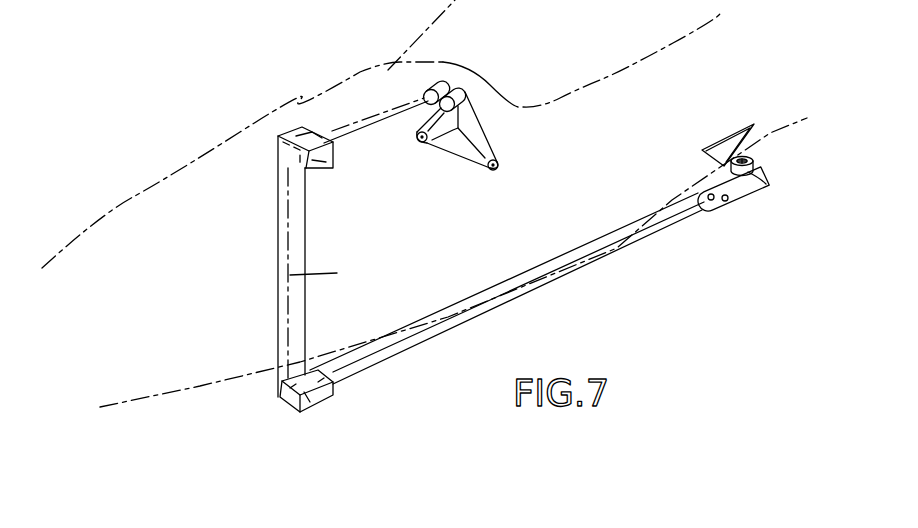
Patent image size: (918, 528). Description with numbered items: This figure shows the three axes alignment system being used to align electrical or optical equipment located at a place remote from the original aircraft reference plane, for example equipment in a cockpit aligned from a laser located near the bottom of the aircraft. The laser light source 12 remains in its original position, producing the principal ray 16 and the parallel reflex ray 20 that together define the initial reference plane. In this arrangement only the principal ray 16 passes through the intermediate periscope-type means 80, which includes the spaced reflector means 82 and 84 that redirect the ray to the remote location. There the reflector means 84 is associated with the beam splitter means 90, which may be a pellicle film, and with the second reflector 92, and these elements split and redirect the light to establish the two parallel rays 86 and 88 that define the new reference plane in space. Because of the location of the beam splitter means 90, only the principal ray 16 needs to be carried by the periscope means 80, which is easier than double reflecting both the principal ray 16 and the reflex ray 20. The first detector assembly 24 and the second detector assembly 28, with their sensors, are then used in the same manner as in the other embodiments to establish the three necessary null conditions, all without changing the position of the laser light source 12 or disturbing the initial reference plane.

The laser light source 12 is at (750, 187).
The principal ray 16 is at (550, 263).
The reflex ray 20 is at (512, 303).
The first detector assembly 24 is at (438, 80).
The second detector assembly 28 is at (460, 110).
The periscope-type means 80 is at (277, 252).
The reflector means 82 is at (280, 397).
The reflector means 84 is at (280, 160).
The parallel ray 86 is at (352, 128).
The parallel ray 88 is at (350, 136).
The beam splitter means 90 is at (318, 130).
The second reflector 92 is at (322, 172).